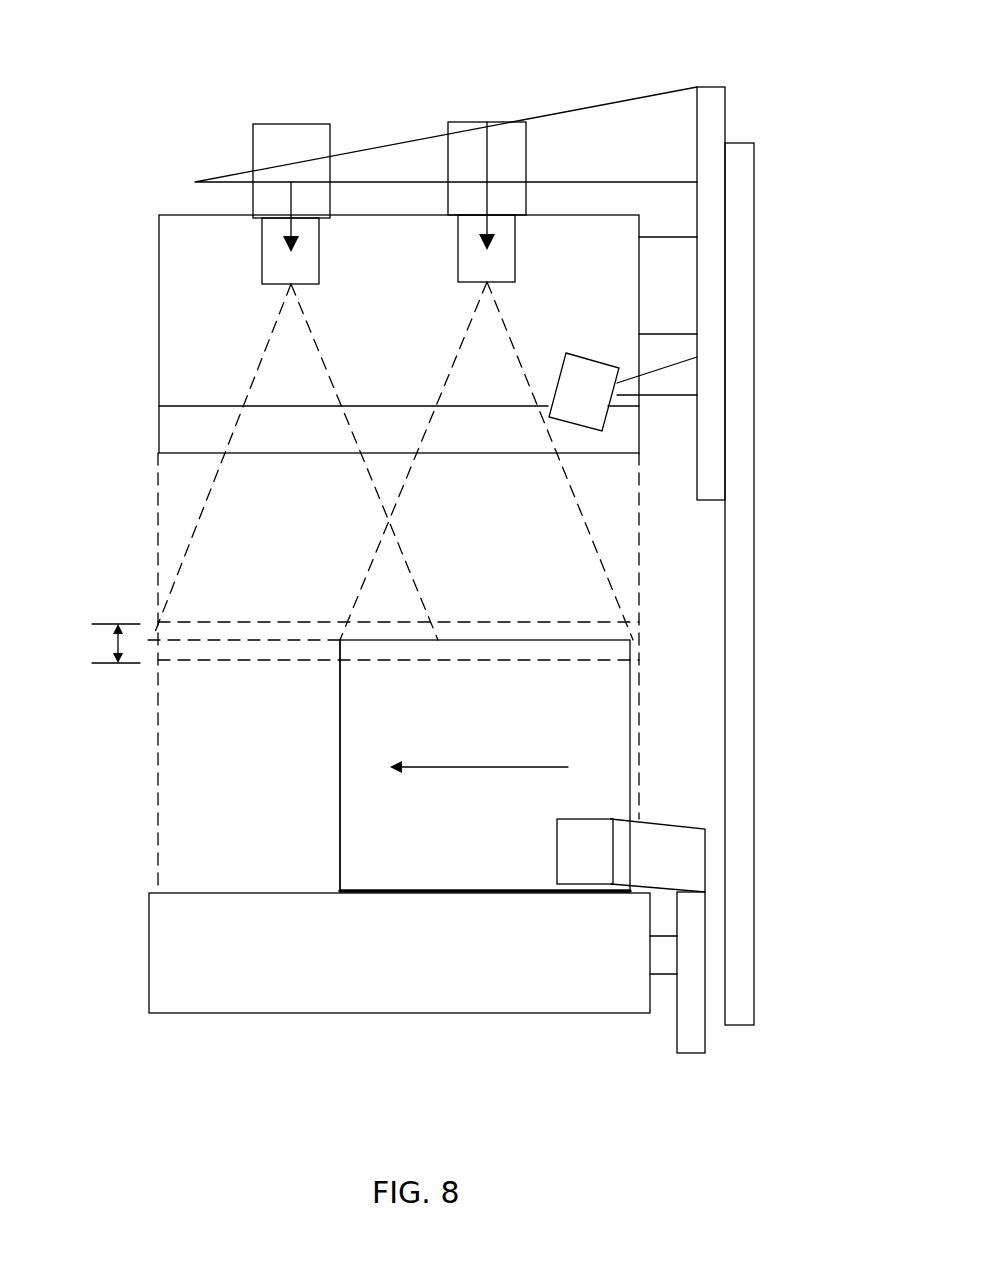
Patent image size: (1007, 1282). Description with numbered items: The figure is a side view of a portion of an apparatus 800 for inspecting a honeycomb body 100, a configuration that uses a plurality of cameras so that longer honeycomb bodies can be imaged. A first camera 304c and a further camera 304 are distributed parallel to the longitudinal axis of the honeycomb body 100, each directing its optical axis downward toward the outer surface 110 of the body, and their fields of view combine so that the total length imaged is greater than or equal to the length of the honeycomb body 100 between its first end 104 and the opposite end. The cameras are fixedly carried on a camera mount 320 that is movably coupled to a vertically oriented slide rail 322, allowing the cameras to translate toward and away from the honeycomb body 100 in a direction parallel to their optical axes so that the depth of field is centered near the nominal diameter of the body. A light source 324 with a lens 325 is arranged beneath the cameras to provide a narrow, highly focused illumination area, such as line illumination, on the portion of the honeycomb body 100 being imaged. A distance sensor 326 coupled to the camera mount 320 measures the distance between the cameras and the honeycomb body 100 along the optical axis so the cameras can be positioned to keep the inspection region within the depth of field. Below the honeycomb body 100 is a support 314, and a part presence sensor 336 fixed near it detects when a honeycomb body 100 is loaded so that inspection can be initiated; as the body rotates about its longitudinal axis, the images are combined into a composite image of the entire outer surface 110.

The apparatus 800 is at (179, 104).
The first camera 304c is at (290, 124).
The camera 304 is at (468, 122).
The camera mount 320 is at (712, 121).
The slide rail 322 is at (757, 460).
The light source 324 is at (172, 316).
The lens 325 is at (170, 430).
The distance sensor 326 is at (588, 377).
The honeycomb body 100 is at (266, 706).
The outer surface 110 is at (497, 716).
The first end 104 is at (336, 767).
The base 314 is at (167, 963).
The part presence sensor 336 is at (586, 872).